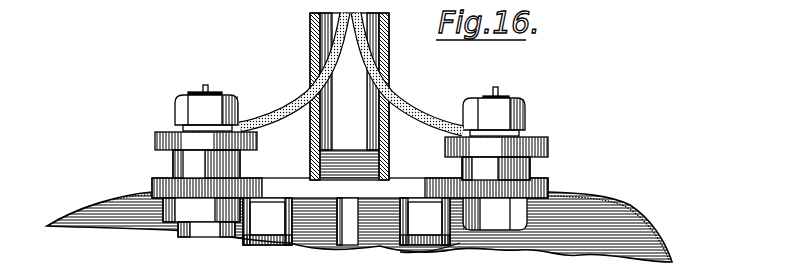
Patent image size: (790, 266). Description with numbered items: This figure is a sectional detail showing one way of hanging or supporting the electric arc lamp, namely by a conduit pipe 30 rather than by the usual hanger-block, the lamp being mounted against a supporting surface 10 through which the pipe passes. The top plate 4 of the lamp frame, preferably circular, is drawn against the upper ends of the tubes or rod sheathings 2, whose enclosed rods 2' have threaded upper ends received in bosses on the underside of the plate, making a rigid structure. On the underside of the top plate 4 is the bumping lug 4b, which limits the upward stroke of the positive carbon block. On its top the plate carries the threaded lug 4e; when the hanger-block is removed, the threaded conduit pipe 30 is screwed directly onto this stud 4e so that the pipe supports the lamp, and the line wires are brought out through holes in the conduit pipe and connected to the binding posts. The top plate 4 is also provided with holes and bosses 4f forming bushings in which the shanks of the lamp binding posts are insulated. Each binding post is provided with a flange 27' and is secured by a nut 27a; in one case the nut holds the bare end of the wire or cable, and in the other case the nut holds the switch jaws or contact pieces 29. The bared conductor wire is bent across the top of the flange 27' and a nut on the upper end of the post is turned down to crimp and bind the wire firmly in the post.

The rail 10 is at (655, 216).
The top plate 4 is at (415, 190).
The bumping lug 4b is at (346, 228).
The threaded lug 4e is at (310, 164).
The bosses 4f is at (173, 163).
The tubes or rod sheathings 2 is at (430, 253).
The rods 2' is at (261, 251).
The nuts 27a is at (510, 214).
The flanges 27' is at (326, 144).
The switch jaws or contact pieces 29 is at (172, 222).
The conduit pipe 30 is at (312, 40).